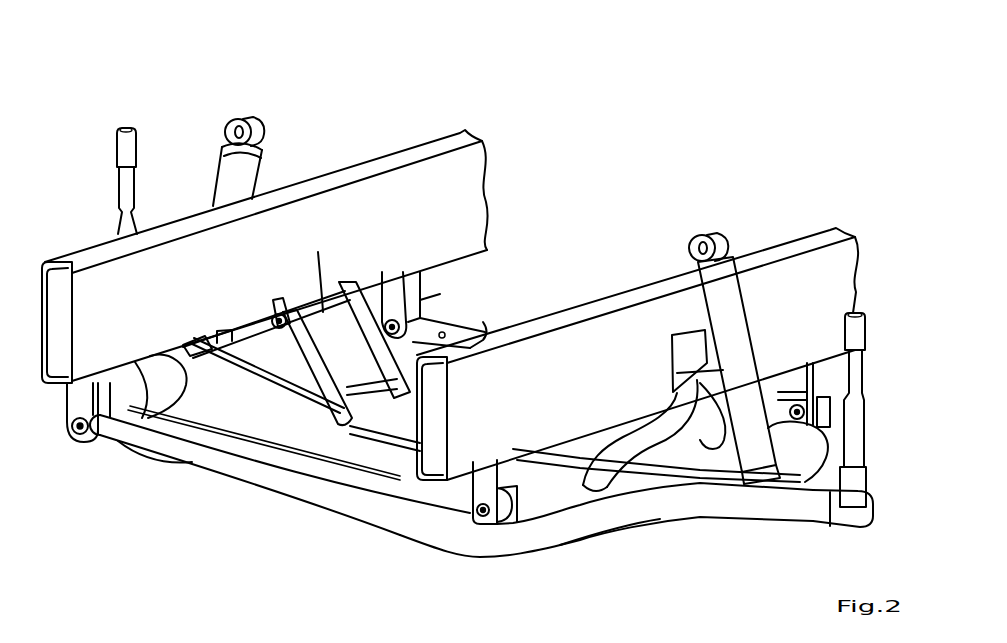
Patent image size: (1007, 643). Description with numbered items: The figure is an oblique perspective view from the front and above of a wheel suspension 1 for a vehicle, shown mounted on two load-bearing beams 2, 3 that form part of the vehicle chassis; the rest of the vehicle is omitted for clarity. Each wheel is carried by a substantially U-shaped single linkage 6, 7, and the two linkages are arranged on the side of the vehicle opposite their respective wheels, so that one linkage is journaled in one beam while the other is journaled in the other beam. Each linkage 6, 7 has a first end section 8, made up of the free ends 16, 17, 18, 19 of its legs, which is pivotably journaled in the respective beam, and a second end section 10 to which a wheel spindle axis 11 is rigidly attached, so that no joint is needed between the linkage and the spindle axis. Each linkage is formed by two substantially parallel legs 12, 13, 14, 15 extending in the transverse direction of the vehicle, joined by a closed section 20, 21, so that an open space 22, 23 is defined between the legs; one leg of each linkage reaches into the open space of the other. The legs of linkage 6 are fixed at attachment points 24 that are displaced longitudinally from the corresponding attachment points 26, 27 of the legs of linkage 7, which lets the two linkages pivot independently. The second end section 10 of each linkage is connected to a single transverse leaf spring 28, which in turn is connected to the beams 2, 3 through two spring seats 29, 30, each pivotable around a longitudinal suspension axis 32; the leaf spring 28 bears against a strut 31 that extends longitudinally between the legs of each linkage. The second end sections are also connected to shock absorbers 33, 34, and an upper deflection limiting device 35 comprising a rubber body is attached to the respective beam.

The wheel suspension 1 is at (179, 83).
The load-bearing beam 2 is at (446, 143).
The load-bearing beam 3 is at (830, 232).
The linkage 6 is at (137, 454).
The linkage 7 is at (597, 514).
The first end section 8 is at (120, 442).
The second end section 10 is at (799, 521).
The wheel spindle axis 11 is at (132, 205).
The leg 12 is at (414, 346).
The leg 13 is at (484, 322).
The leg 14 is at (273, 478).
The leg 15 is at (311, 492).
The free end 16 is at (790, 406).
The free end 17 is at (466, 522).
The free end 18 is at (433, 320).
The free end 19 is at (98, 432).
The closed section 20 is at (640, 523).
The closed section 21 is at (184, 389).
The open space 22 is at (229, 409).
The open space 23 is at (264, 419).
The attachment point 24 is at (829, 421).
The attachment point 26 is at (427, 314).
The attachment point 27 is at (75, 420).
The leaf spring 28 is at (403, 423).
The spring seat 29 is at (581, 487).
The spring seat 30 is at (330, 422).
The strut 31 is at (188, 358).
The suspension axis 32 is at (330, 252).
The shock absorber 33 is at (718, 229).
The shock absorber 34 is at (231, 168).
The upper deflection limiting device 35 is at (708, 432).